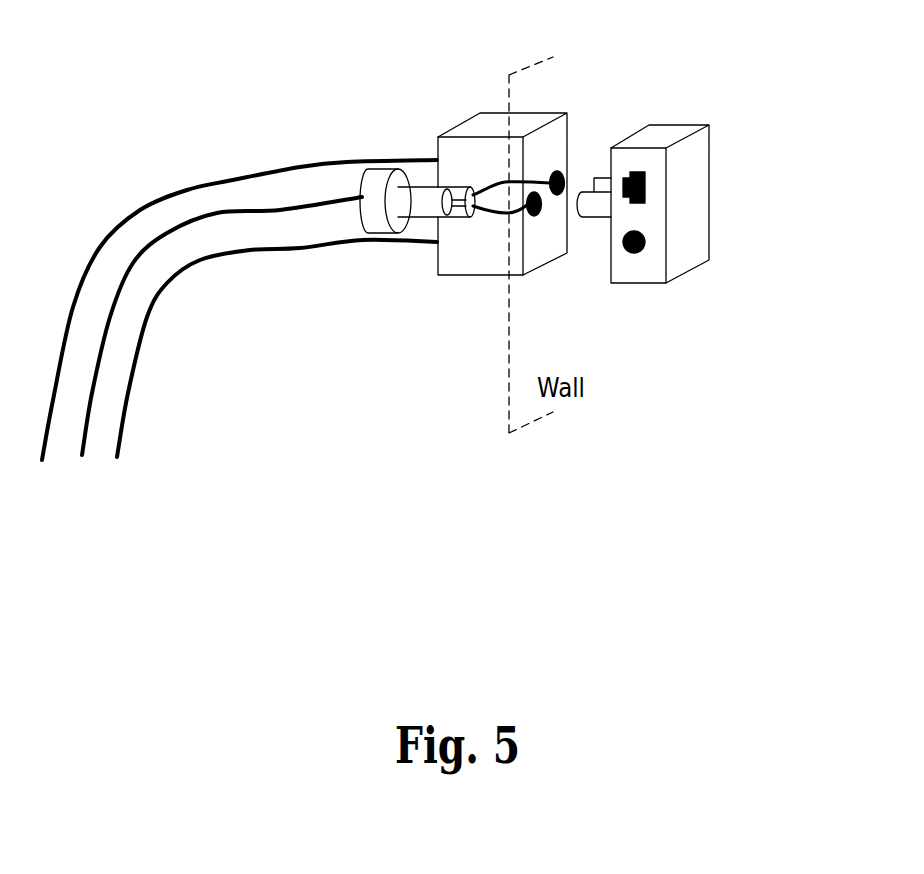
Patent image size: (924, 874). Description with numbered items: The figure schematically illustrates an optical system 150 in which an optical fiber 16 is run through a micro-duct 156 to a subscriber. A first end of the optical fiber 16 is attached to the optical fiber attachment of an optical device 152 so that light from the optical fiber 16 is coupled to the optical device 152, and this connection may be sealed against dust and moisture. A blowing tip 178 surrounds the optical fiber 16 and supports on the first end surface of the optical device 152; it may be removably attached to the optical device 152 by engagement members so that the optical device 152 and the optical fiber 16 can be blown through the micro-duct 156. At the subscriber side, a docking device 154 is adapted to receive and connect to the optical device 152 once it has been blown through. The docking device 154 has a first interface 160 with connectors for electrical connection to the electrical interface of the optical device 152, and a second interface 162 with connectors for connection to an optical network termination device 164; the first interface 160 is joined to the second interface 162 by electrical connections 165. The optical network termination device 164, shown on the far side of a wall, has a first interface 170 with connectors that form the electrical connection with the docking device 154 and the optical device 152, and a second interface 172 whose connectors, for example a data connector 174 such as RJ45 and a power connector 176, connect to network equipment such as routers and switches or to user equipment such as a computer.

The optical fiber 16 is at (220, 223).
The optical system 150 is at (288, 132).
The optical device 152 is at (426, 195).
The docking device 154 is at (514, 194).
The micro-duct 156 is at (217, 247).
The first interface 160 is at (410, 243).
The second interface 162 is at (550, 212).
The optical network termination device 164 is at (683, 195).
The electrical connections 165 is at (500, 183).
The first interface 170 is at (595, 188).
The second interface 172 is at (652, 213).
The data connector 174 is at (645, 182).
The power connector 176 is at (638, 253).
The blowing tip 178 is at (380, 177).